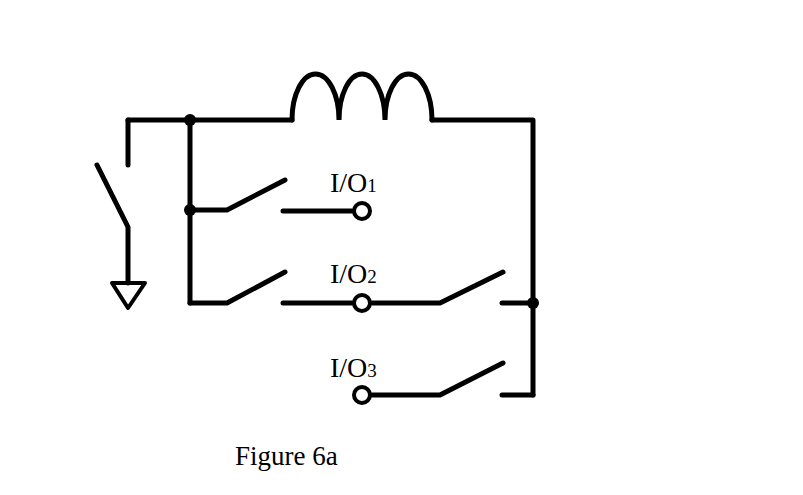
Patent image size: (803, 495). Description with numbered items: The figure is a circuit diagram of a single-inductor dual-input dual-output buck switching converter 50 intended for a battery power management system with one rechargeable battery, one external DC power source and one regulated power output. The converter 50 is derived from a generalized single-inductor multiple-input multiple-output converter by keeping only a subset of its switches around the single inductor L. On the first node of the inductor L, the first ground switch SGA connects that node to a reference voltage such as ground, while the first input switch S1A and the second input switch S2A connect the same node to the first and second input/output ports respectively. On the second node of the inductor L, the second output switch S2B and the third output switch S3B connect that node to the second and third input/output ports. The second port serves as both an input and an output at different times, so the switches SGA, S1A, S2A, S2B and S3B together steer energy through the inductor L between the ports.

The single-inductor DIDO buck switching converter 50 is at (527, 113).
The inductor L is at (362, 76).
The first ground switch SGA is at (93, 236).
The first input switch S1A is at (280, 188).
The second input switch S2A is at (280, 279).
The second output switch S2B is at (452, 275).
The third output switch S3B is at (443, 371).